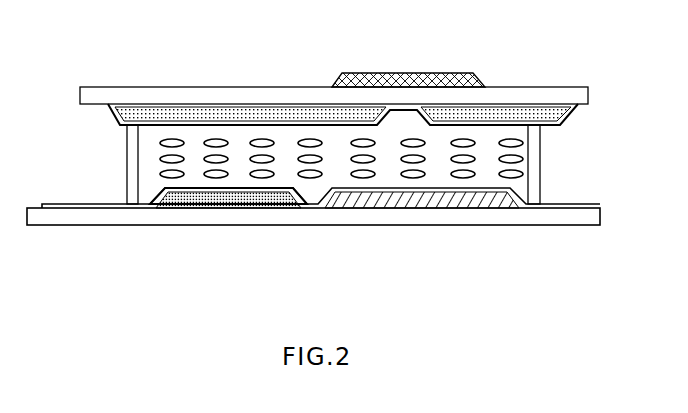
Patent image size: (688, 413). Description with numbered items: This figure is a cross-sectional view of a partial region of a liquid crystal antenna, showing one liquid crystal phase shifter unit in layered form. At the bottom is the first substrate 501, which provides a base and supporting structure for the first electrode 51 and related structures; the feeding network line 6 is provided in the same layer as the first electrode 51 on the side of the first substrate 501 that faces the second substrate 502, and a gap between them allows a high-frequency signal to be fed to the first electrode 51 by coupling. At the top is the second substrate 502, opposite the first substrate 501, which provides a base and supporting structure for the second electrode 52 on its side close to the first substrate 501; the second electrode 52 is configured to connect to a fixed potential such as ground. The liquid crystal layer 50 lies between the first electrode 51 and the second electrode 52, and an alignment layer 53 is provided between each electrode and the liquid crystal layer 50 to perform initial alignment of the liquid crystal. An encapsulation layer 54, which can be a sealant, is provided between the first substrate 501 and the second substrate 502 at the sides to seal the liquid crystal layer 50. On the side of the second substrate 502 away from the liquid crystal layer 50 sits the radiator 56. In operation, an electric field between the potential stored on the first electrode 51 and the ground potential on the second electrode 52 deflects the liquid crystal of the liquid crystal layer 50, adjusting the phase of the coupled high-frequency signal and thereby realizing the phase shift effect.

The second substrate 502 is at (152, 97).
The first substrate 501 is at (147, 212).
The radiator 56 is at (402, 80).
The second electrode 52 is at (290, 117).
The alignment layer 53 is at (218, 127).
The encapsulation layer 54 is at (132, 170).
The feeding network line 6 is at (258, 206).
The first electrode 51 is at (398, 198).
The liquid crystal layer 50 is at (487, 170).